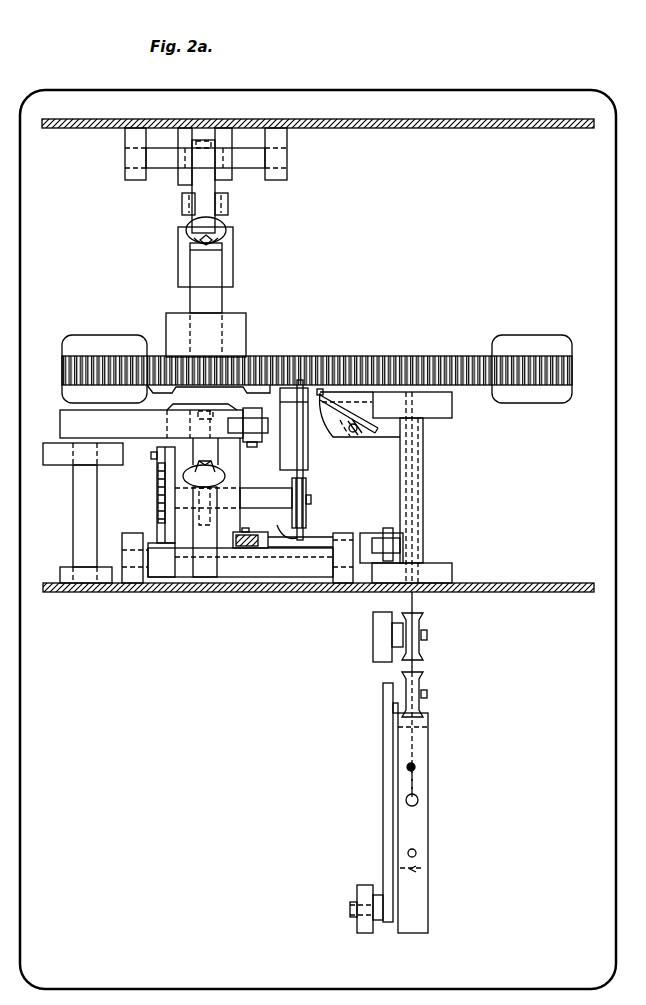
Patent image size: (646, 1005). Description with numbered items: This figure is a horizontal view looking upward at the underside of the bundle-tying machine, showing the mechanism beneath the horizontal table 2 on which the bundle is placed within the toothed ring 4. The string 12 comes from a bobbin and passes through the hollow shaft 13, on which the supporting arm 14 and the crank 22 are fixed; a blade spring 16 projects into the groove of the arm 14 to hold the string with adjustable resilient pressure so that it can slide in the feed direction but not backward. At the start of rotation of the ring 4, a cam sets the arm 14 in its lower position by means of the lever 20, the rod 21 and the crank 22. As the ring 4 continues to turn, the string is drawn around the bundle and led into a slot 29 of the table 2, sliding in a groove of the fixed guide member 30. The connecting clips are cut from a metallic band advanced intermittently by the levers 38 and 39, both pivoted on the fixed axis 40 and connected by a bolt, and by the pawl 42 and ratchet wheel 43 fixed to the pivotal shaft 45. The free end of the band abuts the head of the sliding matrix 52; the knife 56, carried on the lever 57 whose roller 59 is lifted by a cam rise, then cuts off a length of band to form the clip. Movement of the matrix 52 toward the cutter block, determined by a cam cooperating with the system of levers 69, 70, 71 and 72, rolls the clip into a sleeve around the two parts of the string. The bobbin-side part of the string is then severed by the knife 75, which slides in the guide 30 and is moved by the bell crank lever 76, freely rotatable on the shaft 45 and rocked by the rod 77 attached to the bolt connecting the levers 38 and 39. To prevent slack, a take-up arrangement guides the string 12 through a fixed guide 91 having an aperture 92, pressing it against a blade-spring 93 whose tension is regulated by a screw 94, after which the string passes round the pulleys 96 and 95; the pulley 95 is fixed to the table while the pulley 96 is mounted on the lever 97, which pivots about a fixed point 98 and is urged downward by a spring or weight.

The horizontal table 2 is at (604, 201).
The ring 4 is at (375, 366).
The string 12 is at (337, 389).
The hollow shaft 13 is at (423, 500).
The supporting arm 14 is at (368, 438).
The blade spring 16 is at (345, 402).
The lever 20 is at (250, 550).
The rod 21 is at (322, 541).
The crank 22 is at (427, 548).
The slot 29 is at (472, 391).
The fixed guide member 30 is at (305, 450).
The lever 38 is at (205, 580).
The lever 39 is at (160, 532).
The fixed axis 40 is at (253, 579).
The pawl 42 is at (152, 463).
The ratchet wheel 43 is at (157, 487).
The pivotal shaft 45 is at (284, 485).
The sliding matrix 52 is at (222, 301).
The knife 56 is at (207, 406).
The lever 57 is at (82, 419).
The roller 59 is at (268, 437).
The lever 69 is at (215, 190).
The lever 70 is at (228, 209).
The lever 71 is at (224, 219).
The lever 72 is at (228, 262).
The knife 75 is at (305, 475).
The bell crank lever 76 is at (308, 515).
The rod 77 is at (276, 524).
The fixed guide 91 is at (430, 721).
The aperture 92 is at (416, 766).
The blade-spring 93 is at (416, 870).
The screw 94 is at (419, 798).
The pulley 95 is at (424, 648).
The pulley 96 is at (424, 681).
The lever 97 is at (384, 734).
The fixed point 98 is at (352, 908).